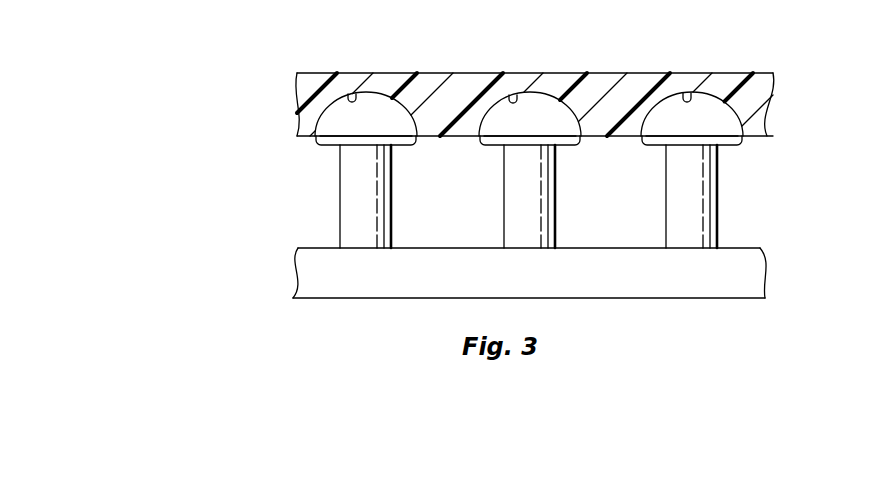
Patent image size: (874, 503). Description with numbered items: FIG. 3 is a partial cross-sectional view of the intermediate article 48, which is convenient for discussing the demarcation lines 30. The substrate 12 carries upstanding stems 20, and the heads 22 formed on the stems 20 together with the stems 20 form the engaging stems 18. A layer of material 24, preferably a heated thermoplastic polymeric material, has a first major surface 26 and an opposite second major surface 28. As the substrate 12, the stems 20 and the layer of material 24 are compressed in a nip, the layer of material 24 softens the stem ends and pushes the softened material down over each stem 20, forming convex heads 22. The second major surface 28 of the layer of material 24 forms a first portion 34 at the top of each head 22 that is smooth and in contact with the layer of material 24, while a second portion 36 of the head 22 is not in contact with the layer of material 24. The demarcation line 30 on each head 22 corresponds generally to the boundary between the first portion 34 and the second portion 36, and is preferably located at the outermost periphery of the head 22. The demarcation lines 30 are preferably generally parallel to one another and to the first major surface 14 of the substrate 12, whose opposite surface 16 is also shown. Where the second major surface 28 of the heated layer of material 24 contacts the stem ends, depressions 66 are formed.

The substrate 12 is at (752, 287).
The first major surface of the substrate 14 is at (760, 249).
The lower surface of base 16 is at (305, 300).
The engaging stems 18 is at (339, 205).
The stems 20 is at (348, 236).
The heads 22 is at (376, 104).
The layer of material 24 is at (588, 86).
The first major surface 26 is at (432, 73).
The second major surface 28 is at (760, 140).
The demarcation lines 30 is at (346, 134).
The first portion 34 is at (499, 98).
The second portion 36 is at (483, 146).
The intermediate article 48 is at (765, 35).
The depressions 66 is at (353, 98).